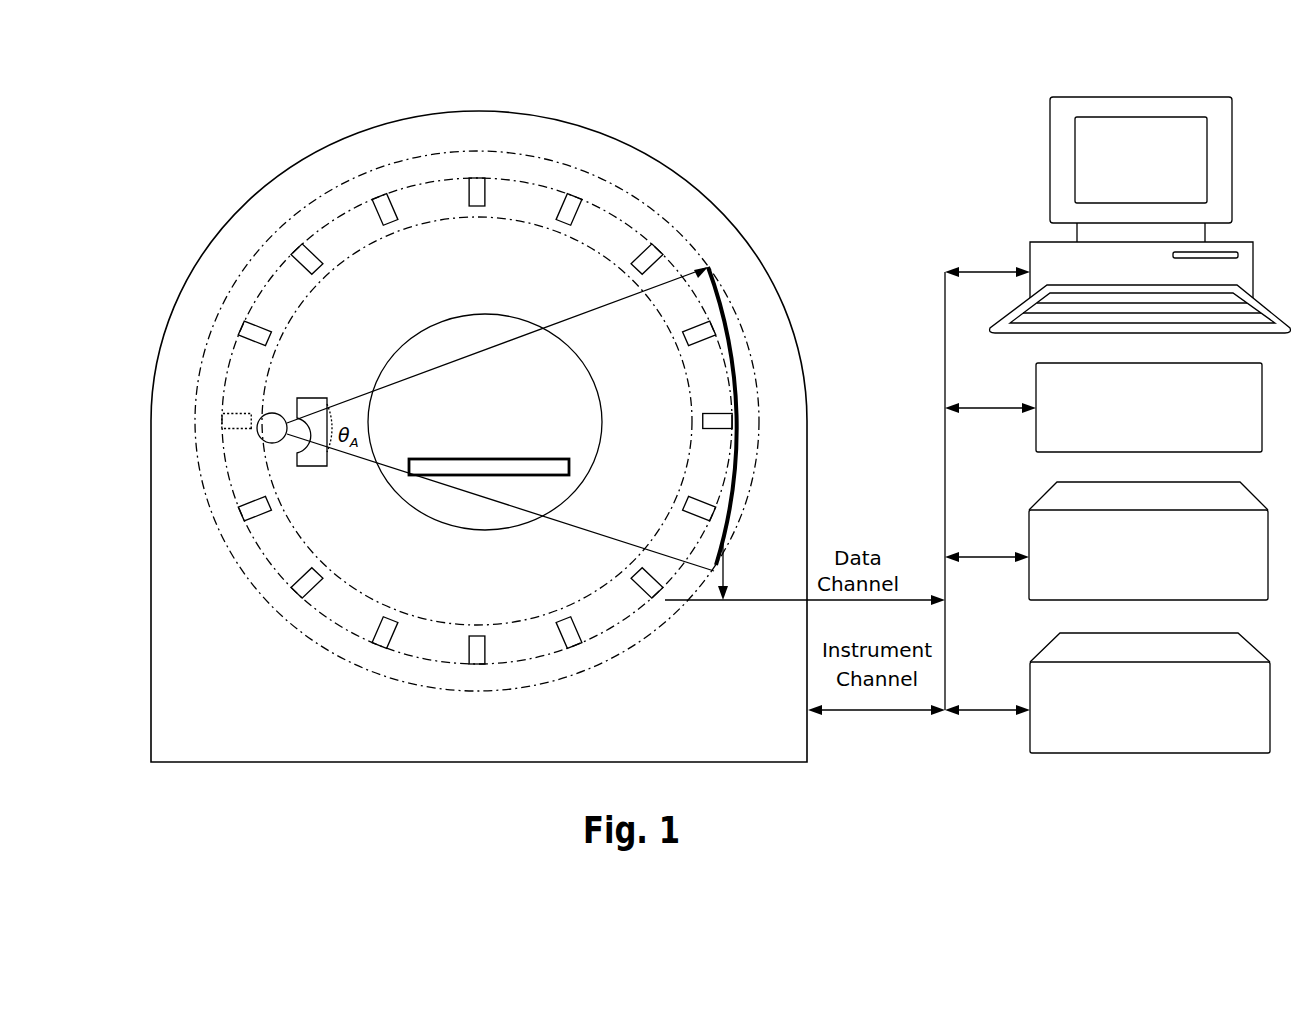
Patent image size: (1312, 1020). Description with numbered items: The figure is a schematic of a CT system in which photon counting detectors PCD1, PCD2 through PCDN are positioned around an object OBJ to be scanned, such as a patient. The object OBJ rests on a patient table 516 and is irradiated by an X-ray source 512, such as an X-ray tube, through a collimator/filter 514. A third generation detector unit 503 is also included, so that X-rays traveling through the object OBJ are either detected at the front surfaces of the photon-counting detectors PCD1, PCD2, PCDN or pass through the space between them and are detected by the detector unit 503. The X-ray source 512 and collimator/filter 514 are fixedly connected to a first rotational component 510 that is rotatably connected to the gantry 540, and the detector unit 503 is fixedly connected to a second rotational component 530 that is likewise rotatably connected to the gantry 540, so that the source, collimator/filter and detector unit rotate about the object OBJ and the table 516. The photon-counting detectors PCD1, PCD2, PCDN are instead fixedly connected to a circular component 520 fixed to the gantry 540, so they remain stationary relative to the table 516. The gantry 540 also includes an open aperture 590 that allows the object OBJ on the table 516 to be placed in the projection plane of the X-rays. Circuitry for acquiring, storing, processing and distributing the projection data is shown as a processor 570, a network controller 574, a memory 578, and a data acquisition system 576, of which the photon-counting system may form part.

The third generation detector unit 503 is at (728, 310).
The first rotational component 510 is at (342, 588).
The X-ray source 512 is at (263, 441).
The collimator/filter 514 is at (298, 399).
The patient table 516 is at (467, 476).
The circular component 520 is at (402, 656).
The second rotational component 530 is at (538, 686).
The gantry 540 is at (698, 194).
The processor 570 is at (1117, 215).
The network controller 574 is at (1103, 407).
The data acquisition system 576 is at (1150, 693).
The memory 578 is at (1106, 541).
The open aperture 590 is at (407, 492).
The photon counting detector PCD1 is at (478, 178).
The photon counting detector PCD2 is at (580, 199).
The photon counting detector PCDN is at (382, 195).
The object OBJ is at (442, 397).